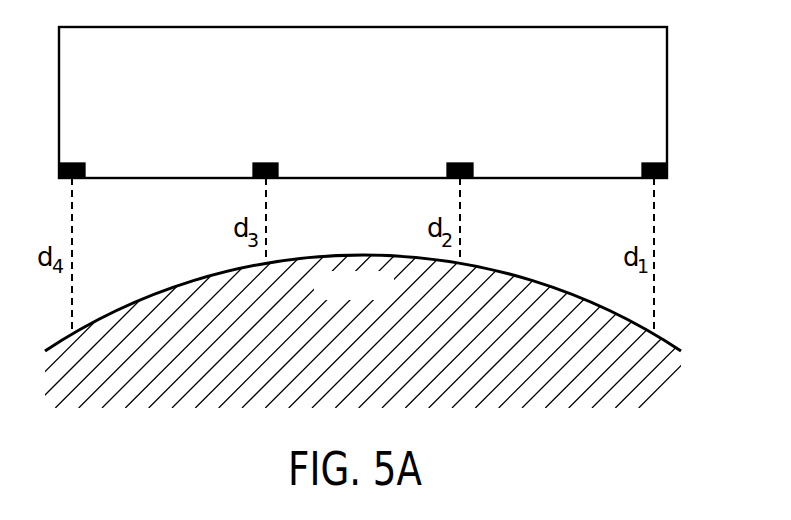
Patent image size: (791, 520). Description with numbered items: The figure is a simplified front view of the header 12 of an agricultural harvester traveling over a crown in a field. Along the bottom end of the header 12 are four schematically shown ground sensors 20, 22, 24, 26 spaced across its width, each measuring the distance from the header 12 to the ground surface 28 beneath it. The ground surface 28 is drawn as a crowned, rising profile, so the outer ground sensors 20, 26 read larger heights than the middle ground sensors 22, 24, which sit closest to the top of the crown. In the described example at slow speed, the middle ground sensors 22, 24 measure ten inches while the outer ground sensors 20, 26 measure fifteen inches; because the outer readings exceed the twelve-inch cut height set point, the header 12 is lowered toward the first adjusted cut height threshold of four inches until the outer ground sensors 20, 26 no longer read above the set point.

The header 12 is at (667, 70).
The ground sensor 20 is at (653, 163).
The ground sensor 22 is at (463, 163).
The ground sensor 24 is at (266, 163).
The ground sensor 26 is at (75, 163).
The ground surface 28 is at (684, 339).